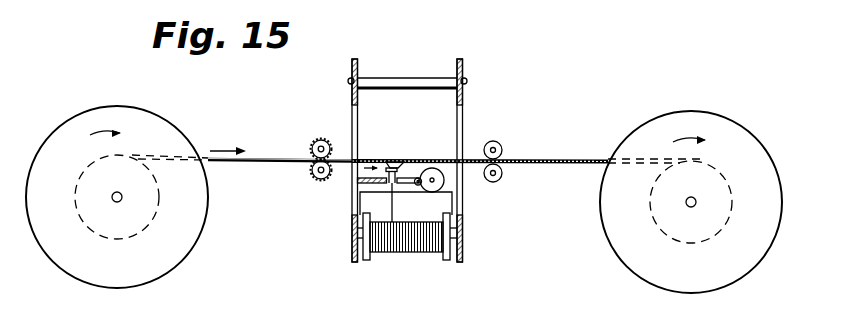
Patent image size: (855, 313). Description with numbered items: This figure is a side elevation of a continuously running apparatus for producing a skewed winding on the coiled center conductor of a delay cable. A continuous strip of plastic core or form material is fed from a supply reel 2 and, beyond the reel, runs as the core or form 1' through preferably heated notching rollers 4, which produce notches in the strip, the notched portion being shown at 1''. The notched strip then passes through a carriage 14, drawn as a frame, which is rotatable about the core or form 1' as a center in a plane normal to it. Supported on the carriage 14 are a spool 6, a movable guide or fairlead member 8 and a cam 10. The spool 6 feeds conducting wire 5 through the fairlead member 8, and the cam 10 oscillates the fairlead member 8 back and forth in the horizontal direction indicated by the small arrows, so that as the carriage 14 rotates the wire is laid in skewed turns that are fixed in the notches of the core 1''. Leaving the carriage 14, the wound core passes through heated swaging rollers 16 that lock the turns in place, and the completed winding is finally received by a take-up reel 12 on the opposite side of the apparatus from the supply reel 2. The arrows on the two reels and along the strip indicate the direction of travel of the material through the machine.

The core or form 1' is at (280, 139).
The notched core or form 1'' is at (480, 139).
The supply reel 2 is at (166, 124).
The notching rollers 4 is at (321, 139).
The conducting wire 5 is at (393, 209).
The spool 6 is at (415, 248).
The fairlead member 8 is at (405, 160).
The cam 10 is at (440, 191).
The take-up reel 12 is at (737, 131).
The carriage 14 is at (466, 86).
The swaging rollers 16 is at (502, 148).